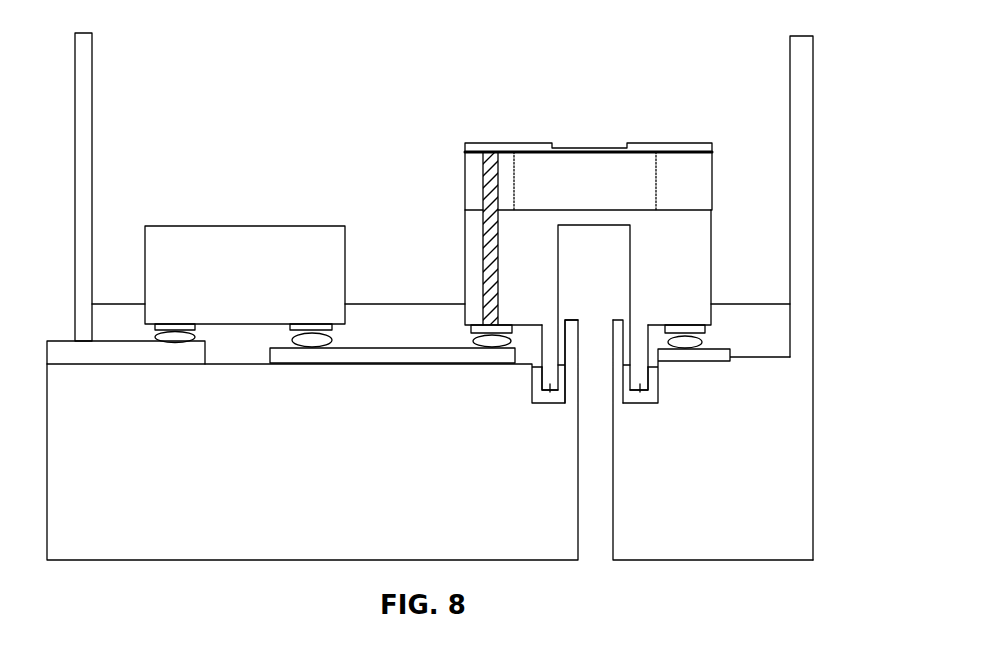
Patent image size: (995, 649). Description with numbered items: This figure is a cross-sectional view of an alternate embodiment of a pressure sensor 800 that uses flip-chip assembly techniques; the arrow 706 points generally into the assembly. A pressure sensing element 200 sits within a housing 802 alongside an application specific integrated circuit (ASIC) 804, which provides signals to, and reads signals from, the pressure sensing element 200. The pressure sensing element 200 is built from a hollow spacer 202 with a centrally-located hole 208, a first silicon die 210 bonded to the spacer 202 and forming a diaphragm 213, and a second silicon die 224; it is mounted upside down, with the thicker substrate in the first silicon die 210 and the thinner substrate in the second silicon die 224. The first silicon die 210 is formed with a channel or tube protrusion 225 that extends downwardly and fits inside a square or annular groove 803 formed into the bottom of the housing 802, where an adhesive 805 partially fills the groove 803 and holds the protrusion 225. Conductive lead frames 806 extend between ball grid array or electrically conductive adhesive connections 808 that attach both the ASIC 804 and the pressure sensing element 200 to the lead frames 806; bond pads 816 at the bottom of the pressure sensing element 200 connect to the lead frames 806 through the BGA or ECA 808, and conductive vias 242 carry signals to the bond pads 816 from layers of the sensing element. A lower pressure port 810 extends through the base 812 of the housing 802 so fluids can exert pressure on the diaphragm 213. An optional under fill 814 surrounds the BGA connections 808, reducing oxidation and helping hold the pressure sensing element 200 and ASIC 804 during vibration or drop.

The pressure sensor 800 is at (833, 18).
The region 706 is at (264, 80).
The pressure sensing element 200 is at (476, 138).
The hole 208 is at (585, 165).
The second silicon die 224 is at (705, 148).
The spacer 202 is at (702, 178).
The conductive vias 242 is at (487, 258).
The first silicon die 210 is at (700, 237).
The diaphragm 213 is at (607, 217).
The tube protrusion 225 is at (557, 400).
The groove 803 is at (552, 392).
The adhesive 805 is at (537, 393).
The application specific integrated circuit 804 is at (225, 284).
The conductive lead frames 806 is at (390, 352).
The ball grid array or electrically conductive adhesive 808 is at (180, 338).
The bond pads 816 is at (478, 340).
The under fill 814 is at (757, 318).
The base 812 is at (200, 560).
The lower pressure port 810 is at (592, 550).
The housing 802 is at (805, 50).